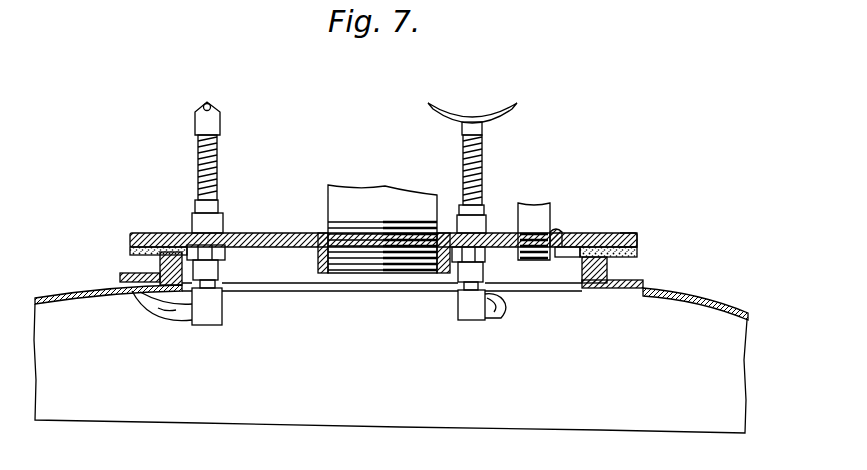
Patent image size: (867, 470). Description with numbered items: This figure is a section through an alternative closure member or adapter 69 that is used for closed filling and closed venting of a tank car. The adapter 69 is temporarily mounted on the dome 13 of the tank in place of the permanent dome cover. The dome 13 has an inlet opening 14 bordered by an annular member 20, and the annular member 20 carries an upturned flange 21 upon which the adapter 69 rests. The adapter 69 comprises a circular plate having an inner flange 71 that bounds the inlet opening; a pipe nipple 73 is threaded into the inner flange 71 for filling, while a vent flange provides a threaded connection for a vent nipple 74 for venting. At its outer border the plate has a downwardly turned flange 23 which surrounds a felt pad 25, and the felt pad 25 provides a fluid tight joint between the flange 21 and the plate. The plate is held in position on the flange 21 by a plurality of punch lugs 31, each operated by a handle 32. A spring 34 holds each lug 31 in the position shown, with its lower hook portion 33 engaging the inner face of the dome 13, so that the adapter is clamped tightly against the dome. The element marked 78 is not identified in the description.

The dome 13 is at (682, 308).
The inlet opening 14 is at (563, 278).
The annular member 20 is at (623, 289).
The upturned flange 21 is at (606, 272).
The downwardly turned flange 23 is at (634, 247).
The felt pad 25 is at (600, 250).
The punch lug 31 is at (198, 149).
The handle 32 is at (207, 104).
The lower hook portion 33 is at (165, 309).
The spring 34 is at (198, 167).
The adapter 69 is at (245, 233).
The inner flange 71 is at (322, 234).
The pipe nipple 73 is at (355, 196).
The vent nipple 74 is at (537, 210).
The rib 78 is at (553, 242).